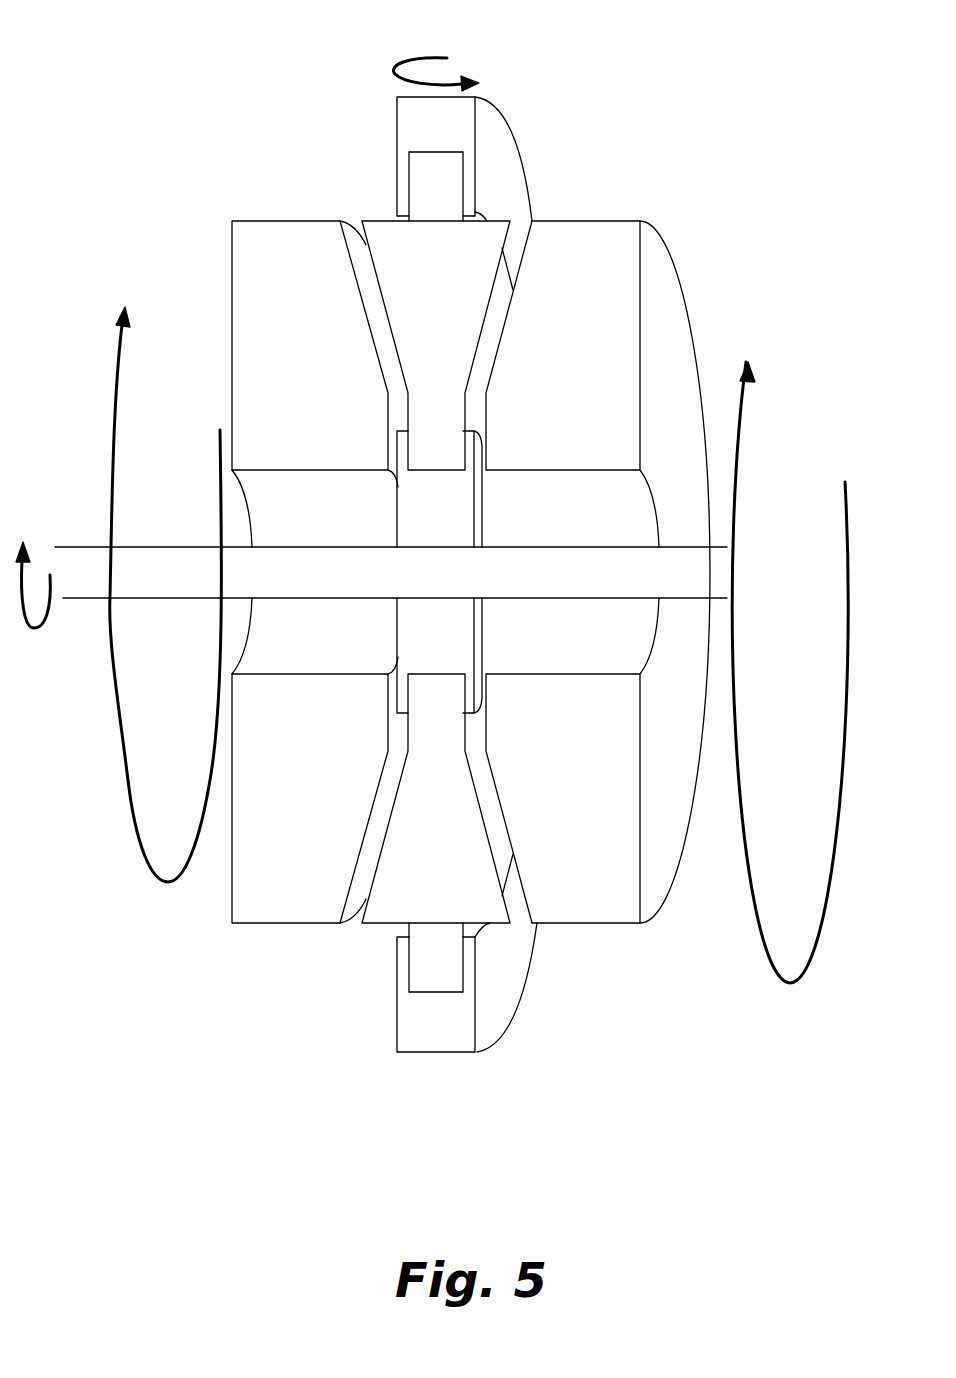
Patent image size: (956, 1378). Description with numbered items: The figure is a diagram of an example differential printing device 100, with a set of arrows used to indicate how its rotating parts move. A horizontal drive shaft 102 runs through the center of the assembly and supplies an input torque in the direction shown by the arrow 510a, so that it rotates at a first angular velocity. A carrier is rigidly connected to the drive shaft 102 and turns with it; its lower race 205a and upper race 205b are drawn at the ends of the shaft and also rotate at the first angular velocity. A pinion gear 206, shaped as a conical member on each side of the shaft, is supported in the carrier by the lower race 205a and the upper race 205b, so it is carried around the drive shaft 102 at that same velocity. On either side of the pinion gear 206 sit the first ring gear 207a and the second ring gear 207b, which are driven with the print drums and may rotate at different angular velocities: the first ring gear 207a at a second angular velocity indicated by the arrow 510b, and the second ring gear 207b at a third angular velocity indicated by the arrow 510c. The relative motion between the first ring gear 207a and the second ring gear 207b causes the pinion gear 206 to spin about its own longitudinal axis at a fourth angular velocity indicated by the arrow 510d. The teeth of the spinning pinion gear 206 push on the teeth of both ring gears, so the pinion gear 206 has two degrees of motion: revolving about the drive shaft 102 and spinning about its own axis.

The differential printing device 100 is at (248, 90).
The drive shaft 102 is at (97, 547).
The lower race 205a is at (397, 665).
The upper race 205b is at (397, 985).
The pinion gear 206 is at (383, 216).
The first ring gear 207a is at (231, 273).
The second ring gear 207b is at (690, 325).
The arrow 510a is at (33, 630).
The arrow 510b is at (142, 855).
The arrow 510c is at (762, 913).
The arrow 510d is at (395, 68).